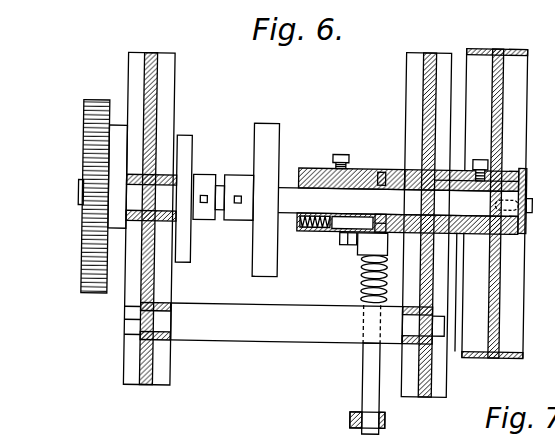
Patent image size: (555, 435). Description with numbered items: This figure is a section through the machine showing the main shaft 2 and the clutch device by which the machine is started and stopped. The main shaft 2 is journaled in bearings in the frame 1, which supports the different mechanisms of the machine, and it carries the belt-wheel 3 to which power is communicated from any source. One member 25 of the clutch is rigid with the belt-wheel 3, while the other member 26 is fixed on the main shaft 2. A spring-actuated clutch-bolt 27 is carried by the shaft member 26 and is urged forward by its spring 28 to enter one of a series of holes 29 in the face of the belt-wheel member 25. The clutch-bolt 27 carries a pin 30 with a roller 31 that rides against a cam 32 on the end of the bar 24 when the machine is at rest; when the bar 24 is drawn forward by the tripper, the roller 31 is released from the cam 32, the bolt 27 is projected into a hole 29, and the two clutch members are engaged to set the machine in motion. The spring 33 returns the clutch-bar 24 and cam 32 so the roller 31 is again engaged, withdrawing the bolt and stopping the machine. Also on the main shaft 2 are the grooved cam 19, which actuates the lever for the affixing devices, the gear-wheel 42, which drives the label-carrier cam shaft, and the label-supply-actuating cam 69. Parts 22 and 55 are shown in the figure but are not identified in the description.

The frame 1 is at (174, 367).
The main shaft 2 is at (405, 199).
The belt-wheel 3 is at (520, 108).
The grooved cam 19 is at (258, 267).
The nut 22 is at (388, 420).
The bar 24 is at (368, 375).
The clutch member 25 is at (398, 168).
The clutch member 26 is at (312, 163).
The clutch-bolt 27 is at (330, 231).
The spring 28 is at (298, 235).
The holes 29 is at (382, 171).
The pin 30 is at (345, 233).
The roller 31 is at (352, 246).
The cam 32 is at (350, 247).
The spring 33 is at (364, 297).
The gear-wheel 42 is at (83, 196).
The key 55 is at (118, 181).
The cam 69 is at (193, 253).